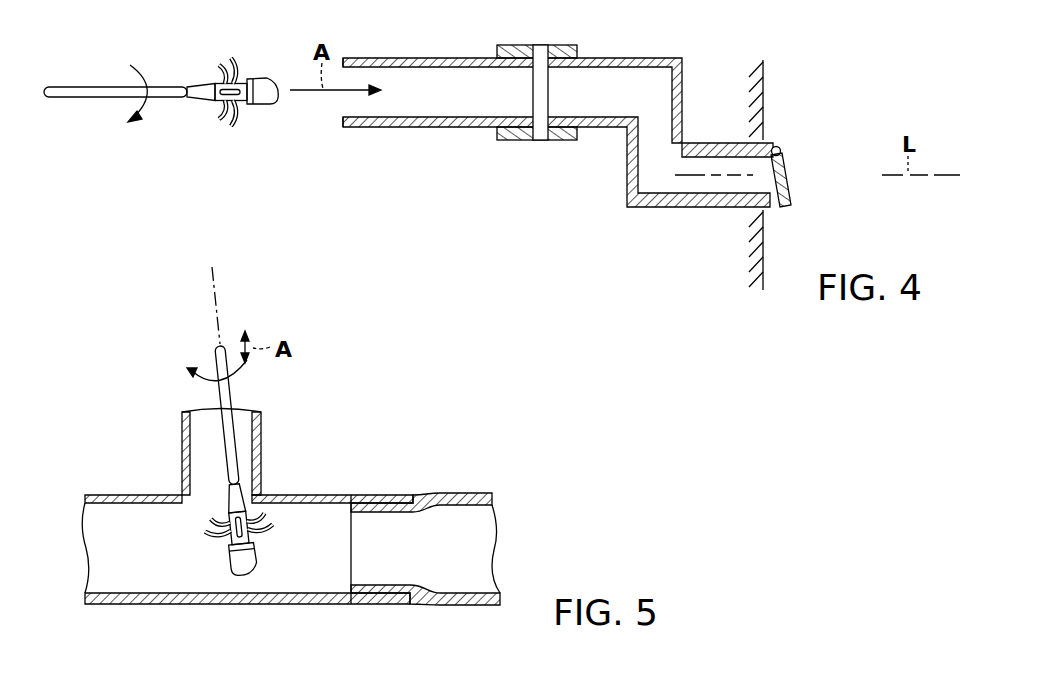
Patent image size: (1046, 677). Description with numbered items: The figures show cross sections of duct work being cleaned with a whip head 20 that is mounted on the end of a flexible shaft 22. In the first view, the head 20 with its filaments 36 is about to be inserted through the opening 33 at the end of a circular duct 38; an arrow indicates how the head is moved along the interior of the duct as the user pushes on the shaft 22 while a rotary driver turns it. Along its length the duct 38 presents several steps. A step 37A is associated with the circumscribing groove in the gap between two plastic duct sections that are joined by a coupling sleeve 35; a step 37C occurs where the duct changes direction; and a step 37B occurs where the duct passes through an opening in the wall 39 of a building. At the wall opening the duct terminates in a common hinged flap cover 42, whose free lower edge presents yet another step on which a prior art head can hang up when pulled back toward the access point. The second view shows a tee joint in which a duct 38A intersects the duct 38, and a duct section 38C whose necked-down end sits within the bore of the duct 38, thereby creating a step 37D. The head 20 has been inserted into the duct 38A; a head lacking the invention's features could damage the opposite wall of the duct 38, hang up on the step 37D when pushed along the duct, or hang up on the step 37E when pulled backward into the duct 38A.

In FIG. 4, the whip head 20 is at (172, 84).
In FIG. 5, the whip head 20 is at (250, 461).
In FIG. 4, the flexible shaft 22 is at (98, 100).
In FIG. 5, the flexible shaft 22 is at (231, 388).
In FIG. 4, the opening 33 is at (334, 112).
In FIG. 4, the coupling sleeve 35 is at (507, 142).
In FIG. 4, the filaments 36 is at (223, 62).
In FIG. 5, the filaments 36 is at (207, 536).
In FIG. 4, the step 37A is at (539, 133).
In FIG. 4, the step 37B is at (764, 192).
In FIG. 4, the step 37C is at (640, 126).
In FIG. 5, the step 37D is at (350, 605).
In FIG. 5, the step 37E is at (182, 507).
In FIG. 4, the duct 38 is at (457, 57).
In FIG. 5, the duct 38 is at (385, 494).
In FIG. 5, the duct 38A is at (263, 452).
In FIG. 5, the duct section 38C is at (458, 493).
In FIG. 4, the wall 39 is at (765, 110).
In FIG. 4, the hinged flap cover 42 is at (793, 201).